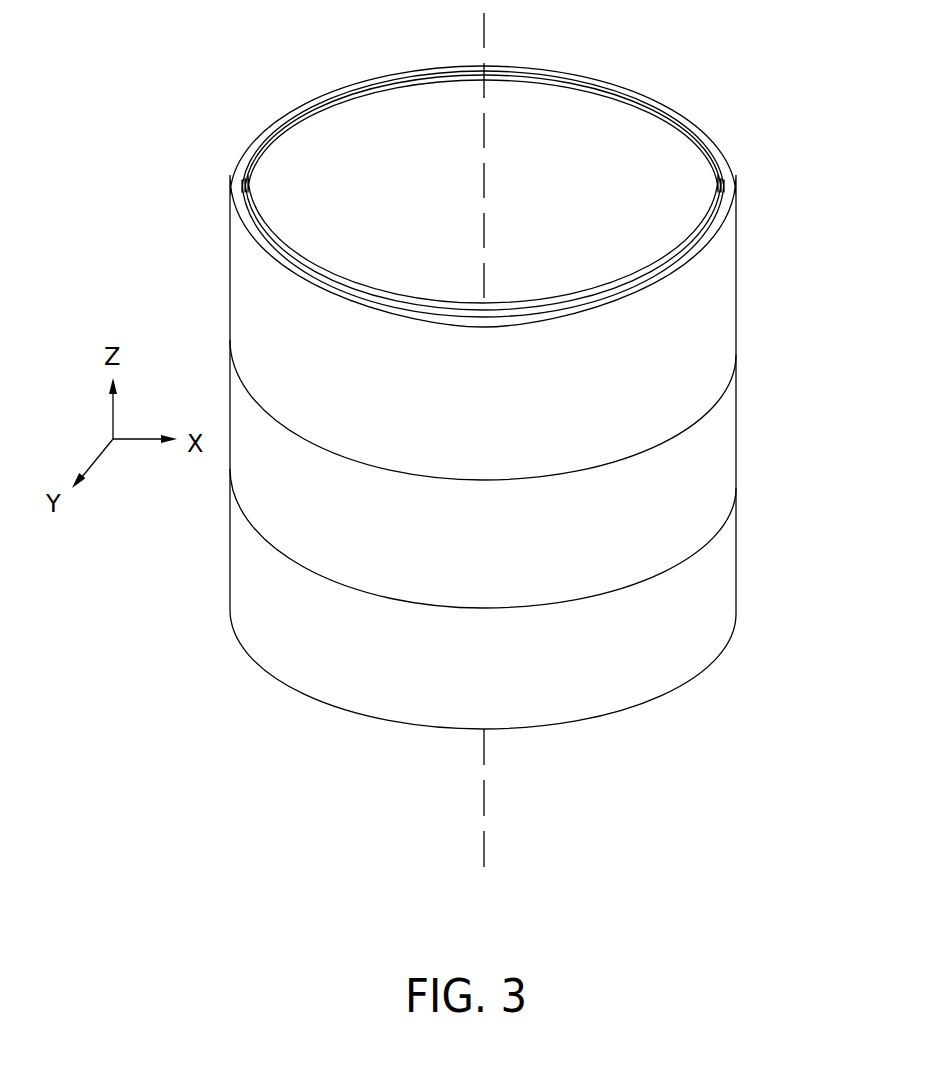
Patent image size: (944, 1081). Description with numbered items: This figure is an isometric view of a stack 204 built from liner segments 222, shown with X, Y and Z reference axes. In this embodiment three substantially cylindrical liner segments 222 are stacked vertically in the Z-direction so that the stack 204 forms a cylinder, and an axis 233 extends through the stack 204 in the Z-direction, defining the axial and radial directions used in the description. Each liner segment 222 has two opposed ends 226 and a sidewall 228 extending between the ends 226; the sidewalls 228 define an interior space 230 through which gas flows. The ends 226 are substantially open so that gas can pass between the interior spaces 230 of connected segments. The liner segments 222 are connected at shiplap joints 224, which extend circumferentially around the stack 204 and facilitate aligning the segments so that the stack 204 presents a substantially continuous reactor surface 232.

The stack 204 is at (473, 435).
The liner segments 222 is at (722, 583).
The shiplap joints 224 is at (283, 550).
The ends 226 is at (685, 123).
The sidewall 228 is at (270, 297).
The interior space 230 is at (555, 182).
The reactor surface 232 is at (373, 173).
The axis 233 is at (485, 796).